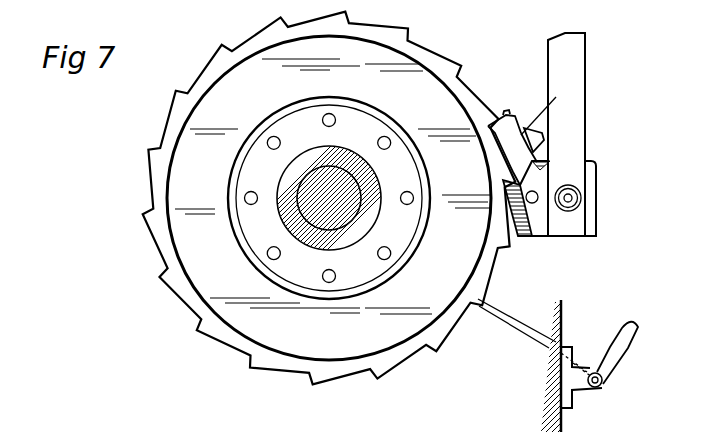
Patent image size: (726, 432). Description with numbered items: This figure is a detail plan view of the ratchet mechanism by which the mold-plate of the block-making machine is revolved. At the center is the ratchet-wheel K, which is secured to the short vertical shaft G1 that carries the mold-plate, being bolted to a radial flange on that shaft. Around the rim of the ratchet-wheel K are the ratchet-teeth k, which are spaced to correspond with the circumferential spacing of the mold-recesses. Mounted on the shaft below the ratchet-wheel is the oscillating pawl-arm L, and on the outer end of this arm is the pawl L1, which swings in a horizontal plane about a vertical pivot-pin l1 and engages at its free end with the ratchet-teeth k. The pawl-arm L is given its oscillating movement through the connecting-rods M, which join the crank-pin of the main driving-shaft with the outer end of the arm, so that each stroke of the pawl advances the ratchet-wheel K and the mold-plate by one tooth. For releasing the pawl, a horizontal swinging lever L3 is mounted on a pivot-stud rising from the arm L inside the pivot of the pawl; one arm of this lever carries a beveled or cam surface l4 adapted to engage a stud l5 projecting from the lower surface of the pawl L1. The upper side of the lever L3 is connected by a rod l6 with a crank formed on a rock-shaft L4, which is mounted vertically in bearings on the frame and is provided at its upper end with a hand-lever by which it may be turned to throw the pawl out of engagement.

The ratchet-wheel K is at (329, 198).
The ratchet-teeth k is at (321, 380).
The vertical shaft G1 is at (341, 160).
The connecting-rod M is at (578, 99).
The oscillating pawl-arm L is at (531, 237).
The pawl L1 is at (522, 130).
The horizontal swinging lever L3 is at (540, 133).
The cam surface l4 is at (544, 109).
The stud l5 is at (512, 155).
The pivot-pin l1 is at (528, 201).
The rod l6 is at (519, 321).
The rock-shaft L4 is at (603, 381).